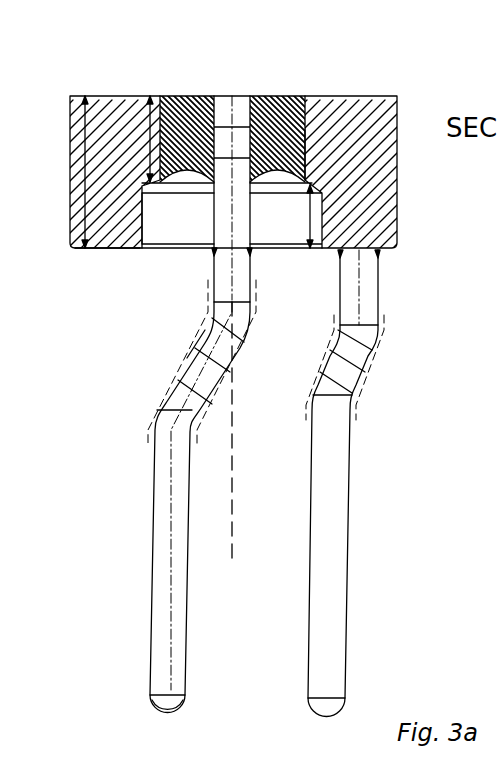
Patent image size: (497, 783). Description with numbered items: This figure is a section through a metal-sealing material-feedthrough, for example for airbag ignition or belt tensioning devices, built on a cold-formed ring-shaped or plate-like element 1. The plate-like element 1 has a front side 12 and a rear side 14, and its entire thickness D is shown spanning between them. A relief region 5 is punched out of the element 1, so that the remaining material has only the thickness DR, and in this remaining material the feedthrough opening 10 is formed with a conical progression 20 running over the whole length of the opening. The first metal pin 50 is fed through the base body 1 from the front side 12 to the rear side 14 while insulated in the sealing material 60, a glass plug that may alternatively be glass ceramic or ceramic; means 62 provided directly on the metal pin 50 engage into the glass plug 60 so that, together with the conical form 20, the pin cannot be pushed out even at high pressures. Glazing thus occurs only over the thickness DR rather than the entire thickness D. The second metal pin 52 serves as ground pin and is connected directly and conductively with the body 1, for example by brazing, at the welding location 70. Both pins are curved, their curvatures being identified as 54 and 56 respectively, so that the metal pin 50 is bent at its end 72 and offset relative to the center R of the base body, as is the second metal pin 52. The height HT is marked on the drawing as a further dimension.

The ring-shaped or plate-like element 1 is at (355, 92).
The feedthrough opening 10 is at (360, 96).
The front side 12 is at (96, 95).
The rear side 14 is at (98, 250).
The relief region 5 is at (158, 230).
The conical progression 20 is at (306, 134).
The sealing material 60 is at (281, 96).
The means engaging into the glass plug 62 is at (226, 96).
The welding location 70 is at (378, 254).
The metal pin 50 is at (160, 546).
The second metal pin 52 is at (340, 540).
The curvature of metal pin 54 is at (160, 392).
The curvature of second metal pin 56 is at (350, 372).
The end of metal pin 72 is at (165, 700).
The entire thickness of the base body D is at (85, 187).
The thickness of the feedthrough opening DR is at (127, 100).
The height dimension HT is at (309, 247).
The center of the plate-like base body R is at (235, 377).